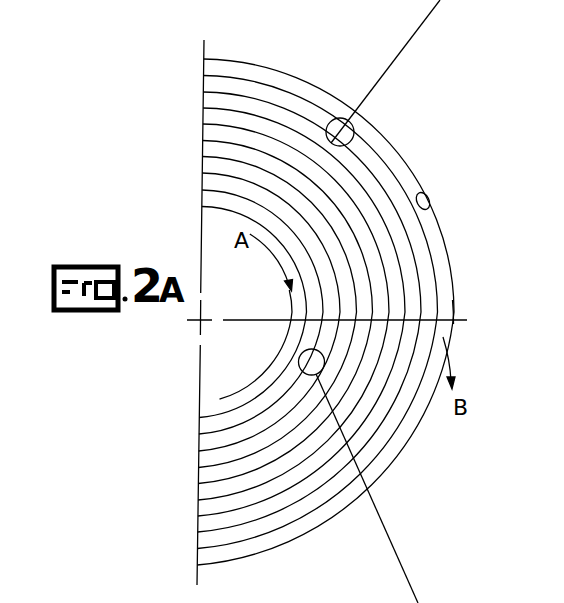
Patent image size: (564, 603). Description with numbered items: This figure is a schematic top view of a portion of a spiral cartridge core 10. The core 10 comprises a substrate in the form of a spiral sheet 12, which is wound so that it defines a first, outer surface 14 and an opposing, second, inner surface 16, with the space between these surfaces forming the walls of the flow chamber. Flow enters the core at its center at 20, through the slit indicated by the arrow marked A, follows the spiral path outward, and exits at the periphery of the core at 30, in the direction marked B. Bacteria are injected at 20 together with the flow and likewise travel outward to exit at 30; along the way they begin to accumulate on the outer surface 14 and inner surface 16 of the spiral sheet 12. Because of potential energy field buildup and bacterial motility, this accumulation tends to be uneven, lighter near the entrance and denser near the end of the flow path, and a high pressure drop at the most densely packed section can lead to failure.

The spiral cartridge core 10 is at (463, 268).
The spiral sheet 12 is at (448, 257).
The first, outer surface 14 is at (453, 306).
The second, inner surface 16 is at (427, 194).
The flow entrance at center of core 20 is at (291, 295).
The flow exit at periphery of core 30 is at (453, 324).